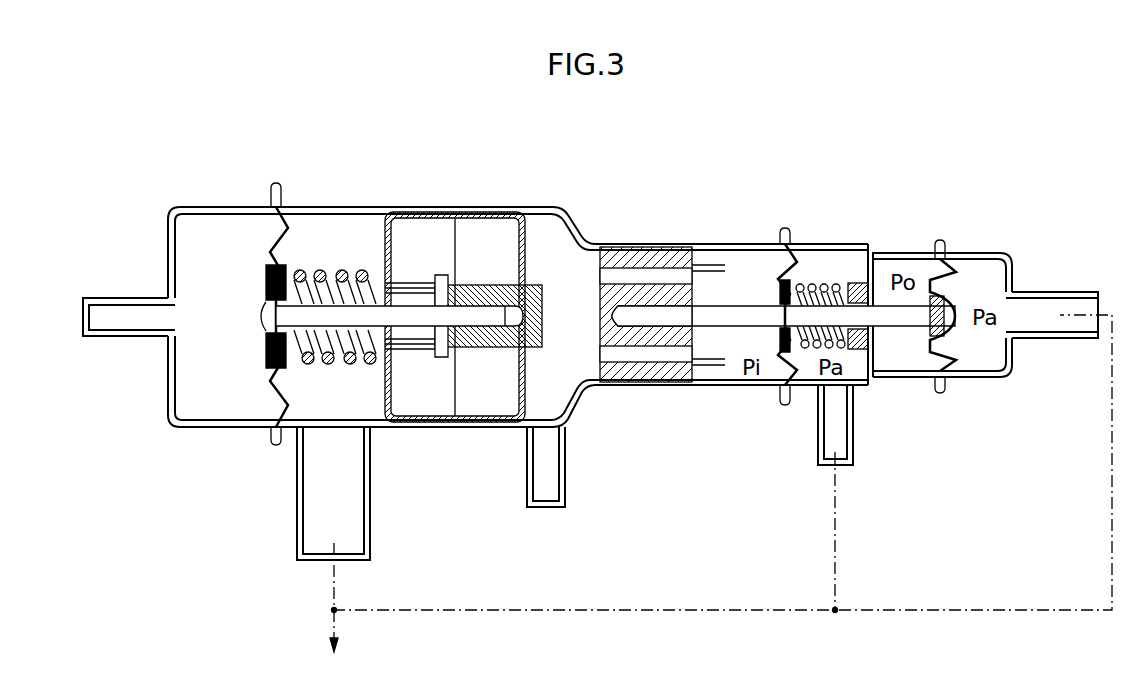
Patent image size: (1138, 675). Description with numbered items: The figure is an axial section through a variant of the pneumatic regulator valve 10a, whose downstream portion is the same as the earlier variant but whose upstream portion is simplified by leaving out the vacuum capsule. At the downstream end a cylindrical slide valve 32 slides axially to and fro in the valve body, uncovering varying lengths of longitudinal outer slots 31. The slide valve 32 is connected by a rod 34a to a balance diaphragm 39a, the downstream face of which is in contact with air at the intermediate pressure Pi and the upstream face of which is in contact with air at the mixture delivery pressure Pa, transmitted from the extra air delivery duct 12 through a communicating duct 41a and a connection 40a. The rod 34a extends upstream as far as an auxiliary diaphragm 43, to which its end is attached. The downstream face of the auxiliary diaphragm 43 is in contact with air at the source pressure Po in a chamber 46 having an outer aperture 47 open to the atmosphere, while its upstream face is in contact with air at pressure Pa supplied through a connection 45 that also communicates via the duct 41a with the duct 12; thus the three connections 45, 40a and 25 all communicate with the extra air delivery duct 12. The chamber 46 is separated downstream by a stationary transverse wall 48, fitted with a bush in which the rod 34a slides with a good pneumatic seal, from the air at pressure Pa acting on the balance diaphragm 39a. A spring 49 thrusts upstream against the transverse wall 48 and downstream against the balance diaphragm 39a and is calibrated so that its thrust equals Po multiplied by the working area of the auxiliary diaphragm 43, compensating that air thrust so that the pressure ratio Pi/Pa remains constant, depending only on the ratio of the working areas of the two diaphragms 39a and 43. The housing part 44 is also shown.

The pneumatic regulator valve 10a is at (543, 192).
The extra air delivery duct 12 is at (349, 632).
The connection 25 is at (370, 508).
The longitudinal outer slots 31 is at (720, 362).
The cylindrical slide valve 32 is at (680, 370).
The rod 34a is at (725, 322).
The balance diaphragm 39a is at (782, 260).
The connection 40a is at (818, 440).
The communicating duct 41a is at (738, 608).
The auxiliary diaphragm 43 is at (955, 271).
The chamber housing 44 is at (942, 311).
The connection 45 is at (1052, 292).
The chamber 46 is at (900, 374).
The outer aperture 47 is at (902, 252).
The stationary transverse wall 48 is at (876, 350).
The spring 49 is at (828, 282).